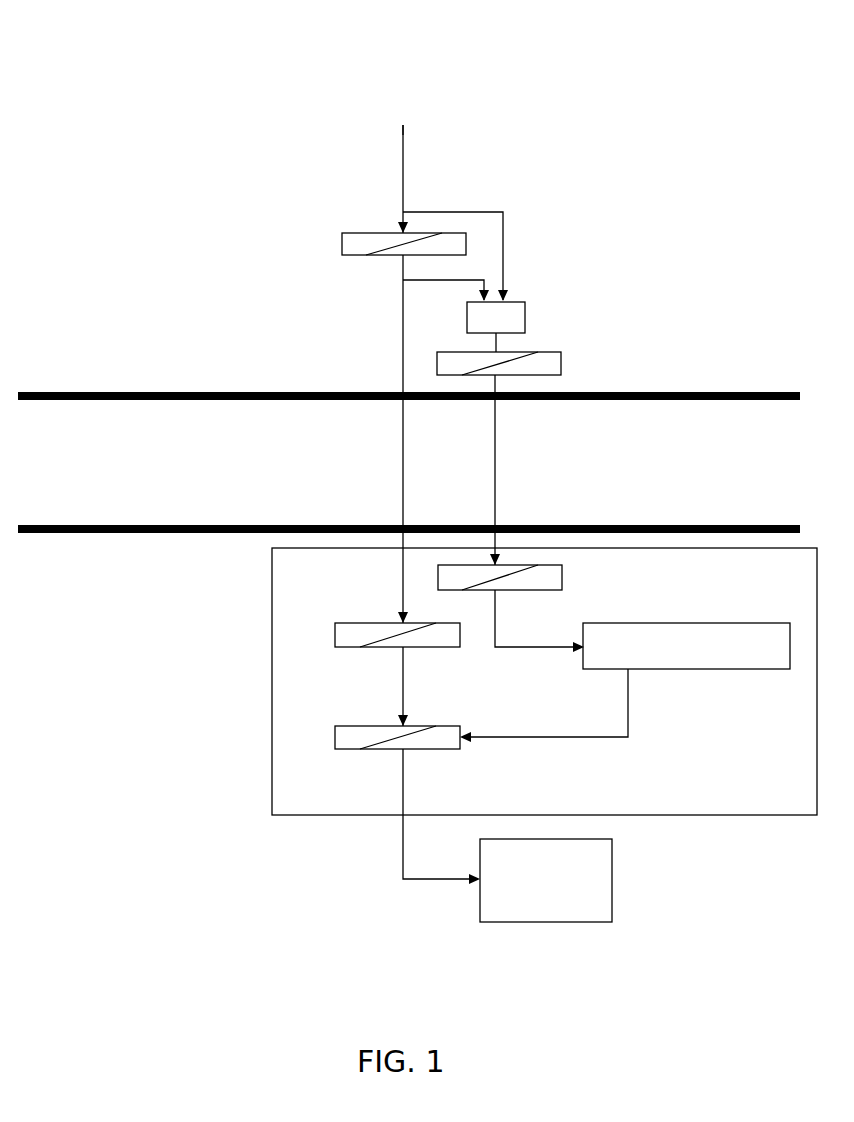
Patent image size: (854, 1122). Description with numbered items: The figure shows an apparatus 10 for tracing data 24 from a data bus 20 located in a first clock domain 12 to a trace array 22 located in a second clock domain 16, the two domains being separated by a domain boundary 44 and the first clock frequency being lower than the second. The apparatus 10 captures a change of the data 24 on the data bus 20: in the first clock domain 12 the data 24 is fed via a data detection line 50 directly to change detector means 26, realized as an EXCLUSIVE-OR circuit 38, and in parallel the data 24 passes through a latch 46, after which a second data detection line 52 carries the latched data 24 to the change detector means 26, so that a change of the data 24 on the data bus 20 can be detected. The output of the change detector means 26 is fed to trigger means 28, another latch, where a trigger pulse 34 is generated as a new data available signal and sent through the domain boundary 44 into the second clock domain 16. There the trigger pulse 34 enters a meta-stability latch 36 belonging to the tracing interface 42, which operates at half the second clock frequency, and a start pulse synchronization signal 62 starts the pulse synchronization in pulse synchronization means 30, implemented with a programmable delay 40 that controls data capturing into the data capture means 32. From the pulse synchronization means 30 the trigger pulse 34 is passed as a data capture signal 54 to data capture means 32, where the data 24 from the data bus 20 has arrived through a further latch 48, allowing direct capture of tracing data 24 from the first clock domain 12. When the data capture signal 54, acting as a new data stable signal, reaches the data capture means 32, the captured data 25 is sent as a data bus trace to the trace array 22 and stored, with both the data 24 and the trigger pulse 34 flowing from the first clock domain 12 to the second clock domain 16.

The apparatus 10 is at (678, 104).
The first clock domain 12 is at (68, 320).
The second clock domain 16 is at (71, 618).
The data bus 20 is at (396, 119).
The trace array 22 is at (478, 914).
The data 24 is at (400, 141).
The captured data 25 is at (402, 852).
The change detector means 26 is at (561, 304).
The trigger means 28 is at (561, 362).
The pulse synchronization means 30 is at (690, 683).
The data capture means 32 is at (358, 726).
The trigger pulse 34 is at (497, 485).
The meta-stability latch 36 is at (562, 577).
The EXCLUSIVE-OR circuit 38 is at (525, 317).
The programmable delay 40 is at (798, 670).
The tracing interface 42 is at (271, 583).
The domain boundary 44 is at (71, 458).
The latch 46 is at (340, 250).
The latch 48 is at (355, 623).
The data detection line 50 is at (504, 248).
The second data detection line 52 is at (448, 281).
The data capture signal 54 is at (555, 745).
The start pulse synchronization signal 62 is at (516, 646).